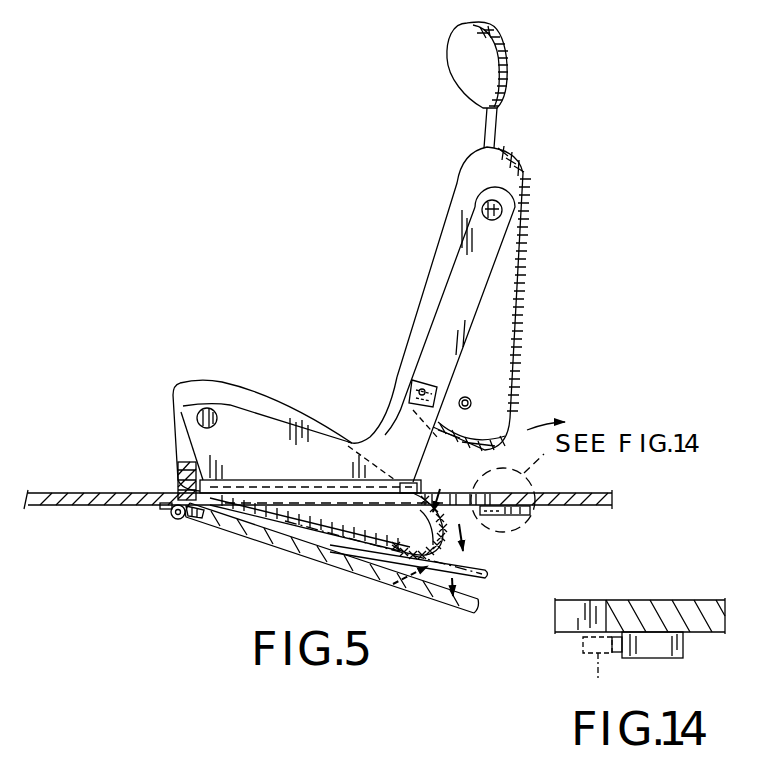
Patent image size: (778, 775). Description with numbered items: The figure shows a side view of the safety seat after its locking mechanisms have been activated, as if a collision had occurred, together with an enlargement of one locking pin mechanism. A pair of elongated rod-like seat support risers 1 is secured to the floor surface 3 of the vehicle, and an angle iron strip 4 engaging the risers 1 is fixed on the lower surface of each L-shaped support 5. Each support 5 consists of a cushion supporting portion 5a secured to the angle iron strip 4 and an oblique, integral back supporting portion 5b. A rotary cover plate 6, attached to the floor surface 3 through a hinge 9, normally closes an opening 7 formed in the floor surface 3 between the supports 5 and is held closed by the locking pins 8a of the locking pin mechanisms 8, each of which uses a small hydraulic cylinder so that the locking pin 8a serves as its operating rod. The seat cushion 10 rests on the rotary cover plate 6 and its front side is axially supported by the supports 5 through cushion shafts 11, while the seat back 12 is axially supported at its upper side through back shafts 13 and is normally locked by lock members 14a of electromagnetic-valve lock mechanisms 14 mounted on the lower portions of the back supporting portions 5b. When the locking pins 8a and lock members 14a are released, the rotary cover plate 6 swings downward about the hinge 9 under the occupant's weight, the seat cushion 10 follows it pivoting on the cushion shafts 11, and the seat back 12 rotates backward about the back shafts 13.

In FIG. 5, the seat support riser 1 is at (182, 468).
In FIG. 5, the floor surface 3 is at (594, 495).
In FIG. 14, the floor surface 3 is at (683, 600).
In FIG. 5, the angle iron strip 4 is at (238, 480).
In FIG. 5, the support 5 is at (444, 283).
In FIG. 5, the cushion supporting portion 5a is at (263, 418).
In FIG. 5, the back supporting portion 5b is at (481, 293).
In FIG. 5, the rotary cover plate 6 is at (392, 586).
In FIG. 5, the opening 7 is at (446, 500).
In FIG. 14, the opening 7 is at (576, 628).
In FIG. 14, the locking pin mechanism 8 is at (645, 661).
In FIG. 14, the locking pin 8a is at (617, 655).
In FIG. 5, the hinge 9 is at (178, 519).
In FIG. 5, the seat cushion 10 is at (213, 381).
In FIG. 5, the cushion shaft 11 is at (197, 418).
In FIG. 5, the seat back 12 is at (519, 155).
In FIG. 5, the back shaft 13 is at (503, 209).
In FIG. 5, the lock mechanism 14 is at (427, 378).
In FIG. 5, the lock member 14a is at (412, 392).